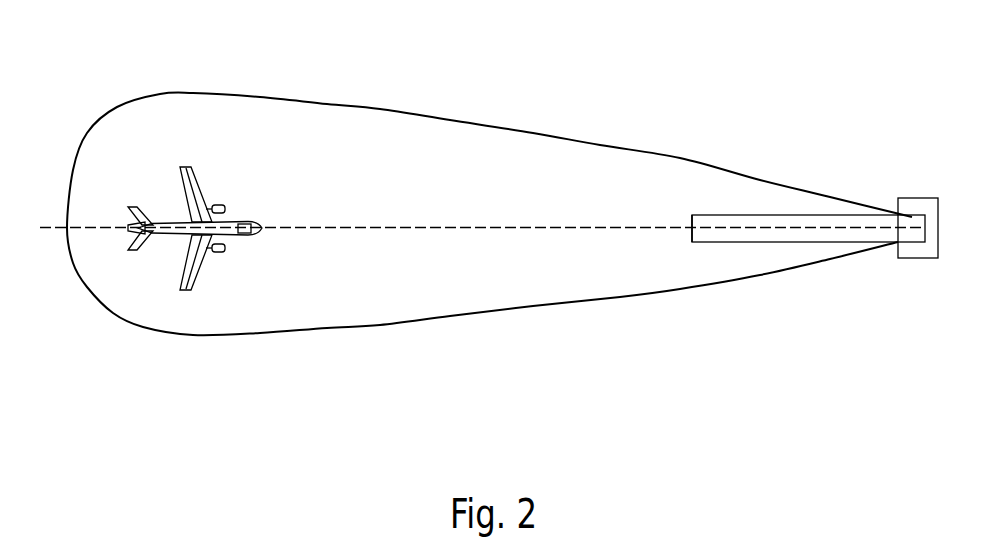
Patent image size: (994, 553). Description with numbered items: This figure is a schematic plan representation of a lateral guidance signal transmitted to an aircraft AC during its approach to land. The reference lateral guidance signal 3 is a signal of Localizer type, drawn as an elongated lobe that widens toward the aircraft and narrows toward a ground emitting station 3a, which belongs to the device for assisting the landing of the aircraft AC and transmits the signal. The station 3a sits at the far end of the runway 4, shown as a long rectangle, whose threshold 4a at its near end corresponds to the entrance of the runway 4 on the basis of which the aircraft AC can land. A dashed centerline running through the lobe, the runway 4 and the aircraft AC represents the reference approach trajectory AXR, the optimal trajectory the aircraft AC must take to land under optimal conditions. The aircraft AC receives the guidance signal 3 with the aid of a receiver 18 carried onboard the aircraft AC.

The reference approach trajectory AXR is at (55, 230).
The reference lateral guidance signal 3 is at (408, 112).
The ground emitting station 3a is at (917, 197).
The runway 4 is at (748, 243).
The threshold of the runway 4a is at (688, 255).
The aircraft AC is at (167, 237).
The receiver 18 is at (243, 237).